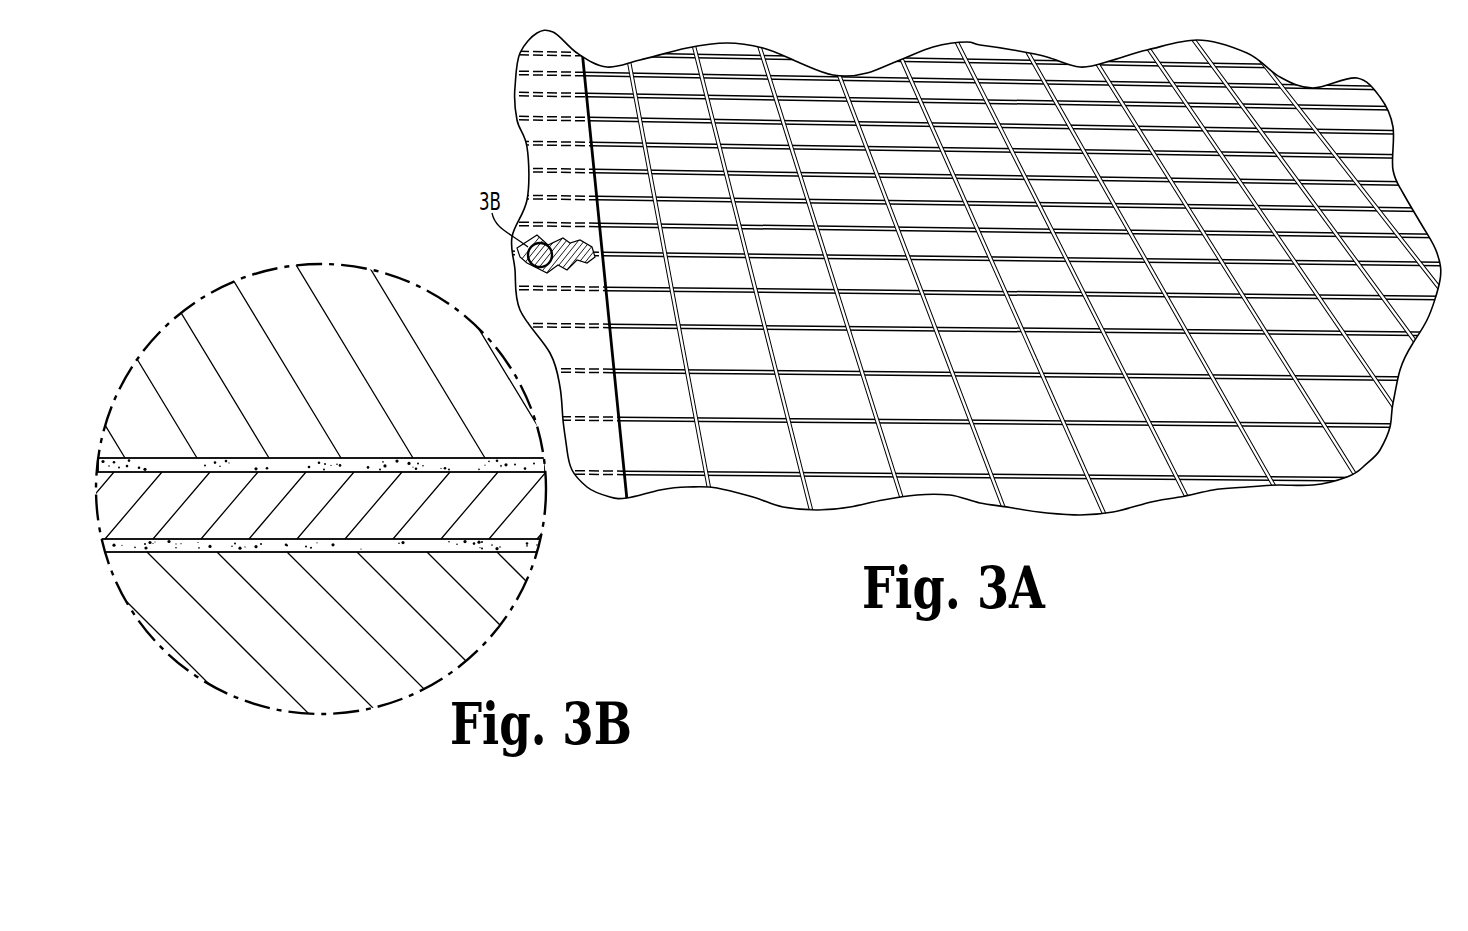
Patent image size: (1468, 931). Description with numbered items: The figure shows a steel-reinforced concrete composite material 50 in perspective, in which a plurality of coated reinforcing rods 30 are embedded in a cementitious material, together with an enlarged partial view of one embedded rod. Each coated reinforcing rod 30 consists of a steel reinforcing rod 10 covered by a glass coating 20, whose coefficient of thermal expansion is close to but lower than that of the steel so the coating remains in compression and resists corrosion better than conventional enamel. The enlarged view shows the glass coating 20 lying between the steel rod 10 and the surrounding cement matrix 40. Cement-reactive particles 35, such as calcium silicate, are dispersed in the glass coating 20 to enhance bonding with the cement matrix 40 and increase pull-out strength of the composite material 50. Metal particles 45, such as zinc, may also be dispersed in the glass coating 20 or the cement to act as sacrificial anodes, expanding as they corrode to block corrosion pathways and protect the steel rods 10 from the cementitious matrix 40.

In FIG. 3B, the steel reinforcing rods 10 is at (546, 513).
In FIG. 3B, the glass coating 20 is at (548, 551).
In FIG. 3B, the coated reinforcing rods 30 is at (280, 438).
In FIG. 3B, the cement-reactive particles 35 is at (264, 546).
In FIG. 3B, the cement matrix 40 is at (312, 661).
In FIG. 3B, the metal particles 45 is at (377, 549).
In FIG. 3A, the steel-reinforced concrete composite material 50 is at (605, 457).